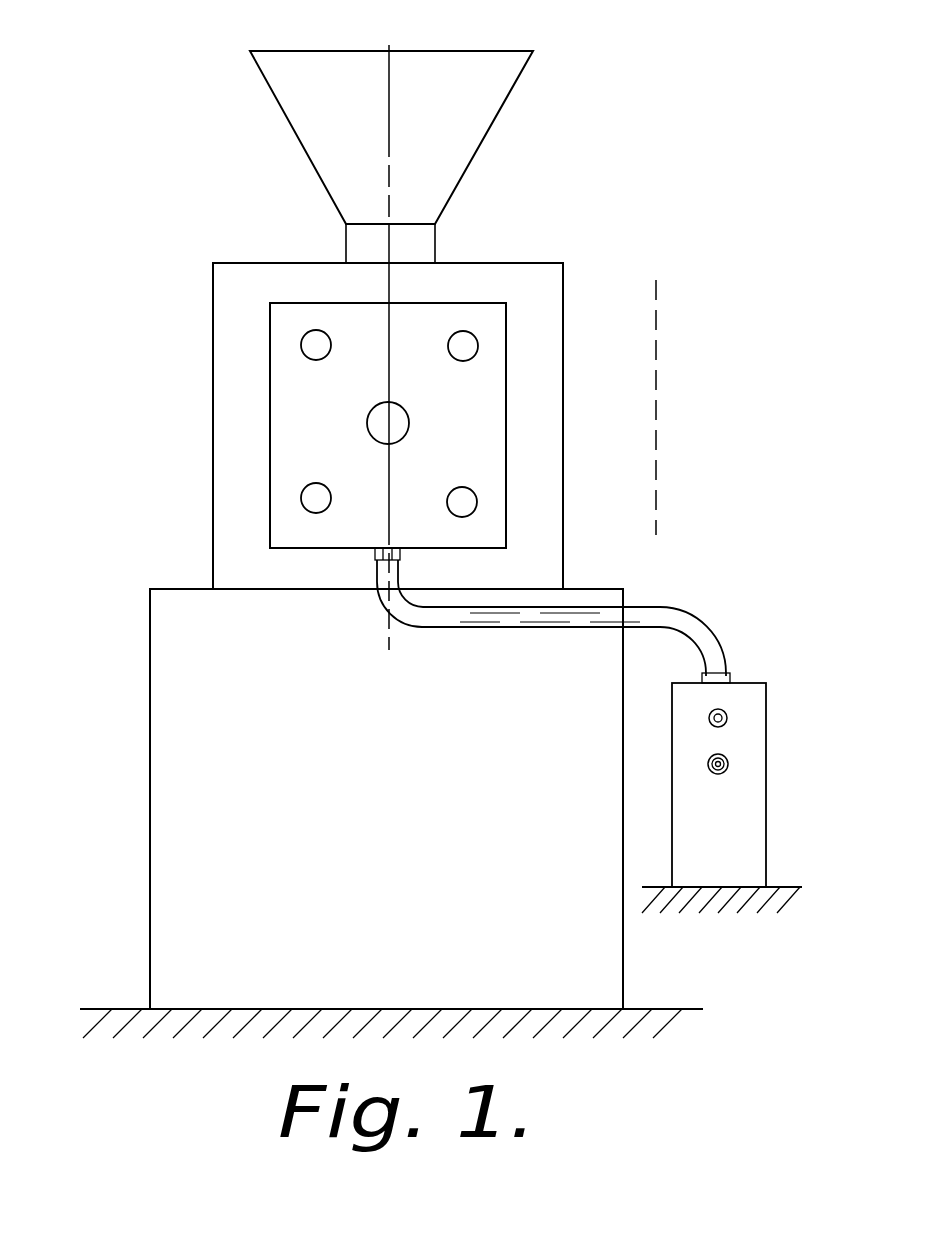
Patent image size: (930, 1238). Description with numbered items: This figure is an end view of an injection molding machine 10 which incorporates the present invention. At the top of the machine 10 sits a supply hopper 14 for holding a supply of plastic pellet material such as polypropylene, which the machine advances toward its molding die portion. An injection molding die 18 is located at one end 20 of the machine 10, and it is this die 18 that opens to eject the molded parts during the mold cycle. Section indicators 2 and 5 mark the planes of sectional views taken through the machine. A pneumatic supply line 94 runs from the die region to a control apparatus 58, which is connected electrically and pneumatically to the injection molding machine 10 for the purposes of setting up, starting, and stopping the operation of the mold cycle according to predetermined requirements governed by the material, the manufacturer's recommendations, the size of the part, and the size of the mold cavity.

The section line 2- 2 is at (386, 14).
The section line 5- 5 is at (658, 246).
The injection molding machine 10 is at (177, 524).
The supply hopper 14 is at (497, 122).
The injection molding die 18 is at (270, 385).
The one end 20 is at (435, 428).
The control apparatus 58 is at (767, 730).
The pneumatic supply line 94 is at (658, 608).